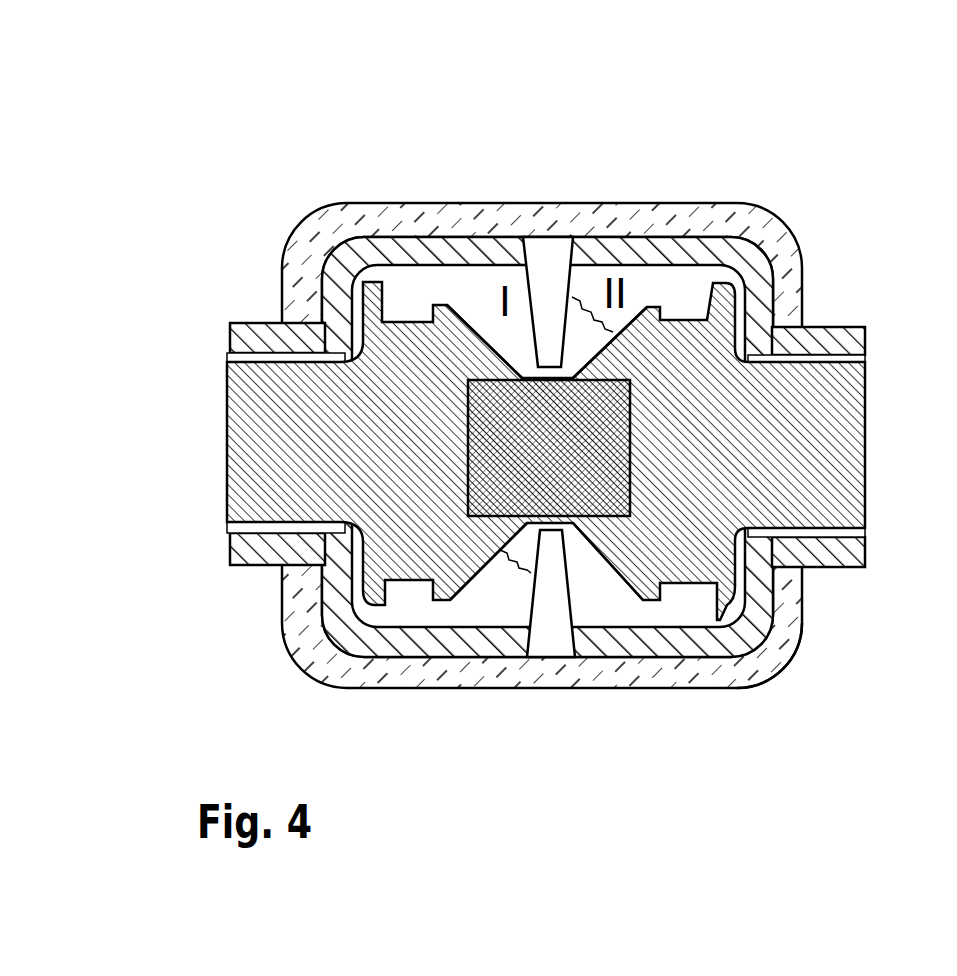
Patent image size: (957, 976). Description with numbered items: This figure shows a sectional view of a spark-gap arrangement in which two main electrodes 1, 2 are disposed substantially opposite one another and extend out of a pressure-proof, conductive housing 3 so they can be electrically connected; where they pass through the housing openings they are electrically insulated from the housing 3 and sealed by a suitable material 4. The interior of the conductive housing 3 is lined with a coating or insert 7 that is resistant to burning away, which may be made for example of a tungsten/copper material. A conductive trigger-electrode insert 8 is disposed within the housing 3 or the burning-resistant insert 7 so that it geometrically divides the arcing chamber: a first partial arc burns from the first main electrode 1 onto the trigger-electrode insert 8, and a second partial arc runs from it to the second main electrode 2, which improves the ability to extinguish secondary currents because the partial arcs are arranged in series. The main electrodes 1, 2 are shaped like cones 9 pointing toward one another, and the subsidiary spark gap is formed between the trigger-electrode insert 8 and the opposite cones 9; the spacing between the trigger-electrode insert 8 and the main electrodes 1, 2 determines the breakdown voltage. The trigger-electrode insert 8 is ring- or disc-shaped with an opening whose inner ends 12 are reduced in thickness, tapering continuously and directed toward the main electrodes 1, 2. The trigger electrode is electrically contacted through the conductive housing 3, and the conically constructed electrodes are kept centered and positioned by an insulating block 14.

The first main electrode 1 is at (243, 408).
The second main electrode 2 is at (848, 440).
The conductive housing 3 is at (582, 213).
The insulating material 4 is at (743, 318).
The burning-resistant insert 7 is at (438, 240).
The conductive trigger-electrode insert 8 is at (538, 262).
The cones 9 is at (478, 325).
The inner ends 12 is at (561, 255).
The insulating block 14 is at (790, 643).